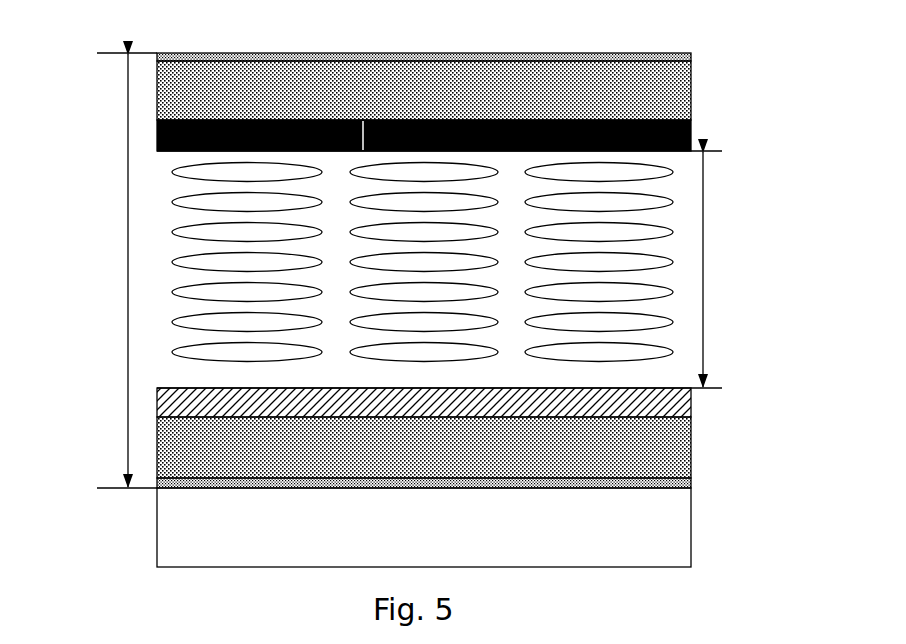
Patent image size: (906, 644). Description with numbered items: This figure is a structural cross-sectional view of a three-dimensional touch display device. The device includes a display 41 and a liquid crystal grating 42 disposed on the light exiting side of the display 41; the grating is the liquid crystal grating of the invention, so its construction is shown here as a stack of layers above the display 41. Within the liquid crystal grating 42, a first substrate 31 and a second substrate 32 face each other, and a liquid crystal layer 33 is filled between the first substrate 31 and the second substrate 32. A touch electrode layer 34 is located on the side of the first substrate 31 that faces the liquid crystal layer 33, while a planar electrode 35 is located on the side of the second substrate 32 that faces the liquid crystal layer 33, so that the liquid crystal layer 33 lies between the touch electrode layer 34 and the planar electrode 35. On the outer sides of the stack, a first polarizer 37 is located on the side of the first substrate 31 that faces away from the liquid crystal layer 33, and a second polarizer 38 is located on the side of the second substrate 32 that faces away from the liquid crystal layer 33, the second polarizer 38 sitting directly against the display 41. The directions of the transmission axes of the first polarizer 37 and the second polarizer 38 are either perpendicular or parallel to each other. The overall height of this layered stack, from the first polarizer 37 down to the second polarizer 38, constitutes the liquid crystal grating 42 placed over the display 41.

The first polarizer 37 is at (691, 55).
The first substrate 31 is at (691, 78).
The touch electrode layer 34 is at (691, 137).
The liquid crystal layer 33 is at (705, 248).
The planar electrode 35 is at (692, 405).
The second substrate 32 is at (692, 452).
The second polarizer 38 is at (692, 481).
The display 41 is at (154, 532).
The liquid crystal grating 42 is at (111, 243).